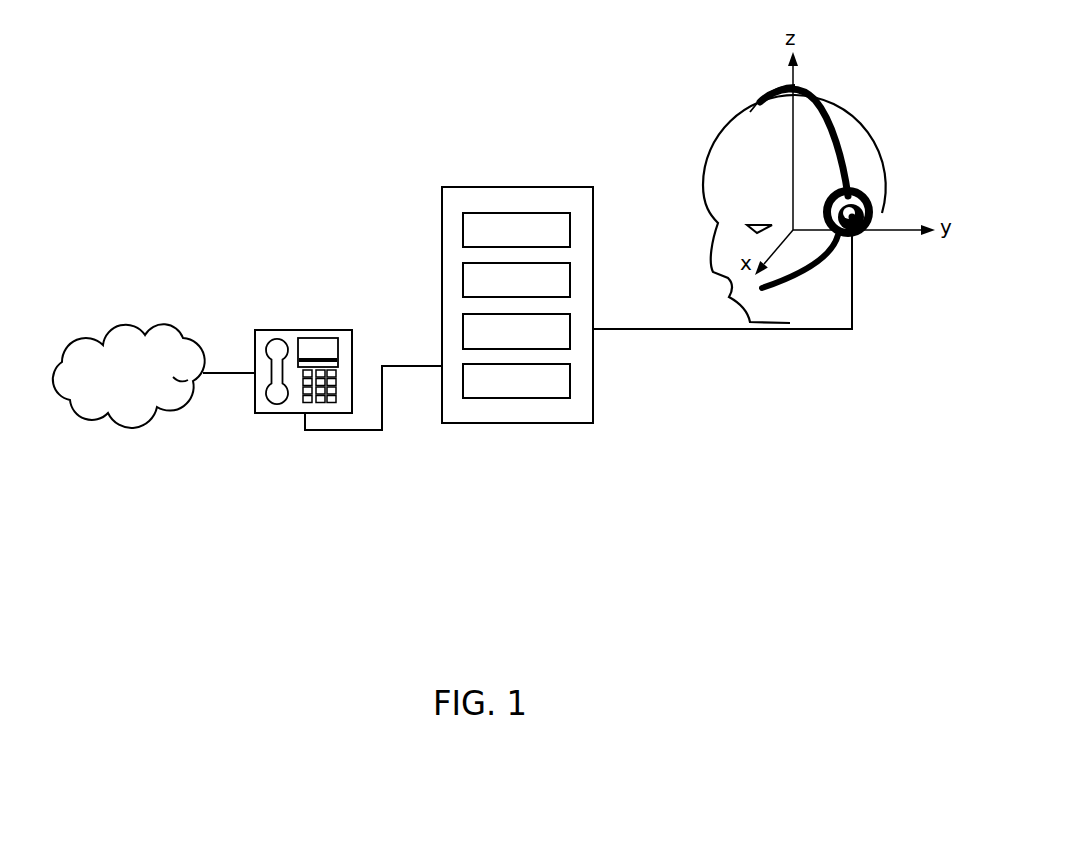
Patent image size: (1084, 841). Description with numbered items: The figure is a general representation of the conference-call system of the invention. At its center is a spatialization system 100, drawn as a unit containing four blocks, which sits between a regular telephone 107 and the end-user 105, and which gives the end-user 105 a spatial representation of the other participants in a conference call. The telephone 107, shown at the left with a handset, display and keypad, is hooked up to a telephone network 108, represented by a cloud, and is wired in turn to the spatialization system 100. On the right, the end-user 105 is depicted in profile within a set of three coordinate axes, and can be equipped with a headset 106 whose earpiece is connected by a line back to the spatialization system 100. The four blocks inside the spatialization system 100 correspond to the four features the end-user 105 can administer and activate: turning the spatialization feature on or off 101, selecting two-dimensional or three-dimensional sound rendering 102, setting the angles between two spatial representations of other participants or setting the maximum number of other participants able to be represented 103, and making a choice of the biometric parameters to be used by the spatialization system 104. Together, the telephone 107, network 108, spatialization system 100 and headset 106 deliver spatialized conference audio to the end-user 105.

The spatialization system 100 is at (442, 420).
The spatialization on/off feature 101 is at (540, 398).
The 2D or 3D sound rendering selection feature 102 is at (572, 328).
The participant angle and maximum number setting feature 103 is at (572, 278).
The biometric parameter choice feature 104 is at (517, 213).
The end-user 105 is at (830, 100).
The headset 106 is at (868, 194).
The telephone 107 is at (333, 330).
The telephone network 108 is at (140, 327).